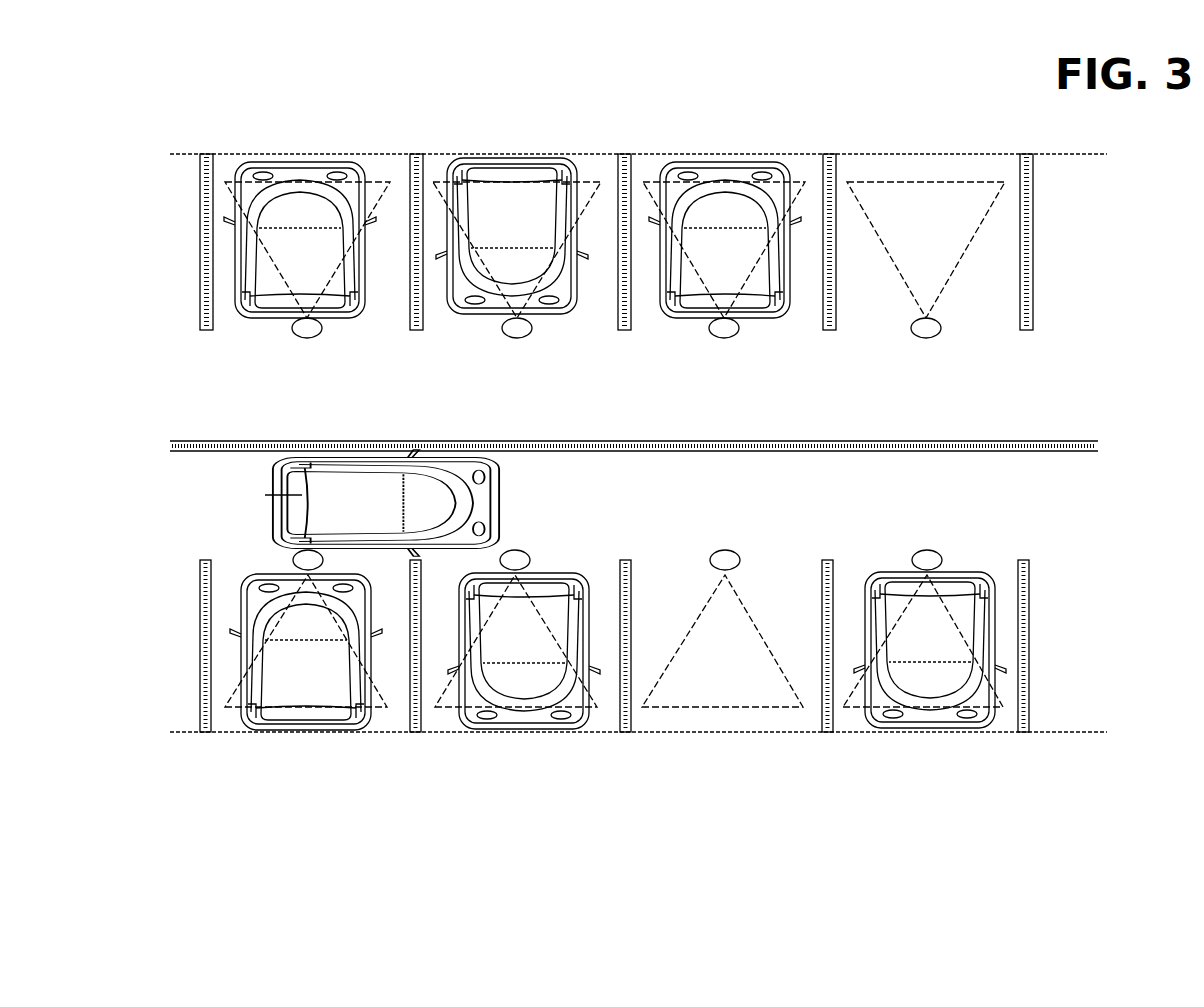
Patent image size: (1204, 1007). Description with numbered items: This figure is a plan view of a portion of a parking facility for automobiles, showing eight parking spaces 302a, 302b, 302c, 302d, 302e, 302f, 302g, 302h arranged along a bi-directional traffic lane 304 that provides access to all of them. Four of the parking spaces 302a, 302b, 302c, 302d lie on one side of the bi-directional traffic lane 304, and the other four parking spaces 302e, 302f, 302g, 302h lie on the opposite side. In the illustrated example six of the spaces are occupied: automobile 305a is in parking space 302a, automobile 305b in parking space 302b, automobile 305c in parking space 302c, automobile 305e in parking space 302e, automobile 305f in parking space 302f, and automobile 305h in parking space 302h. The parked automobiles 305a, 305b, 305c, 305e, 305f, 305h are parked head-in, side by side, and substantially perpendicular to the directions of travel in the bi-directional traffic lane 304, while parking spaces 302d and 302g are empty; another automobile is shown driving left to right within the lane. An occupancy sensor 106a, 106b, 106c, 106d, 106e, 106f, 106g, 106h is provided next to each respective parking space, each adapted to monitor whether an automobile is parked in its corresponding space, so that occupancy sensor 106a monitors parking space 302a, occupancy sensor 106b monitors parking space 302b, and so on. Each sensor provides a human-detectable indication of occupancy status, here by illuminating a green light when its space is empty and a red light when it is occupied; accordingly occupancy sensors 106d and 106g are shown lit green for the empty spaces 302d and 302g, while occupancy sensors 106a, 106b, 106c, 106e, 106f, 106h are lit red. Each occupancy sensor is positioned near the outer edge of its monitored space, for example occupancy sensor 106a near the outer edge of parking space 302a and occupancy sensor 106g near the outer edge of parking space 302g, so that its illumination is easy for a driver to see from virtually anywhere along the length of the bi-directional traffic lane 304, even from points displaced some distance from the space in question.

The occupancy sensor 106a is at (307, 339).
The occupancy sensor 106b is at (528, 338).
The occupancy sensor 106c is at (720, 340).
The occupancy sensor 106d is at (940, 338).
The occupancy sensor 106e is at (294, 556).
The occupancy sensor 106f is at (516, 549).
The occupancy sensor 106g is at (728, 549).
The occupancy sensor 106h is at (943, 540).
The parking space 302a is at (388, 312).
The parking space 302b is at (597, 312).
The parking space 302c is at (808, 312).
The parking space 302d is at (998, 279).
The parking space 302e is at (218, 605).
The parking space 302f is at (598, 606).
The parking space 302g is at (776, 592).
The parking space 302h is at (996, 628).
The bi-directional traffic lane 304 is at (1102, 330).
The automobile 305a is at (270, 306).
The automobile 305b is at (492, 310).
The automobile 305c is at (697, 303).
The automobile 305e is at (360, 590).
The automobile 305f is at (566, 580).
The automobile 305h is at (956, 592).